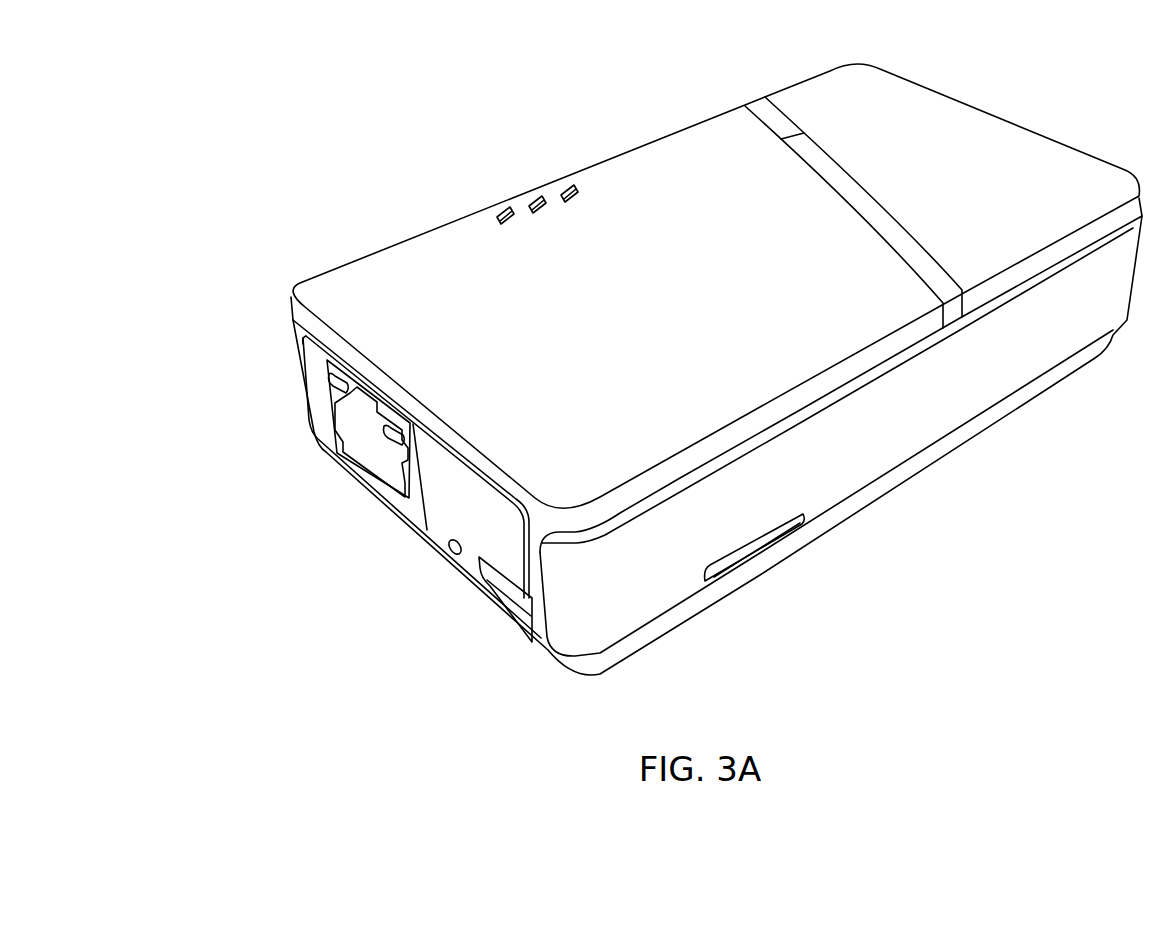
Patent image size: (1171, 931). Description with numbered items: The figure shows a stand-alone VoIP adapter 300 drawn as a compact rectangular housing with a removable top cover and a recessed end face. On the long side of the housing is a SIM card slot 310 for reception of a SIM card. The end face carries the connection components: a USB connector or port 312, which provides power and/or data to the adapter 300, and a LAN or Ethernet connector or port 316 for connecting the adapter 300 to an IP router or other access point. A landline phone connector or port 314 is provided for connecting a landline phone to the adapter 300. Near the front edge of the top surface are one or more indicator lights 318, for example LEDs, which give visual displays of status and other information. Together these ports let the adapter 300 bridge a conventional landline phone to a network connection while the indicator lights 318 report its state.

The adapter 300 is at (250, 96).
The SIM card slot 310 is at (785, 531).
The USB connector or port 312 is at (505, 588).
The RJ-11 connector or port 314 is at (1020, 127).
The LAN or Ethernet connector or port 316 is at (343, 418).
The indicator lights 318 is at (522, 197).